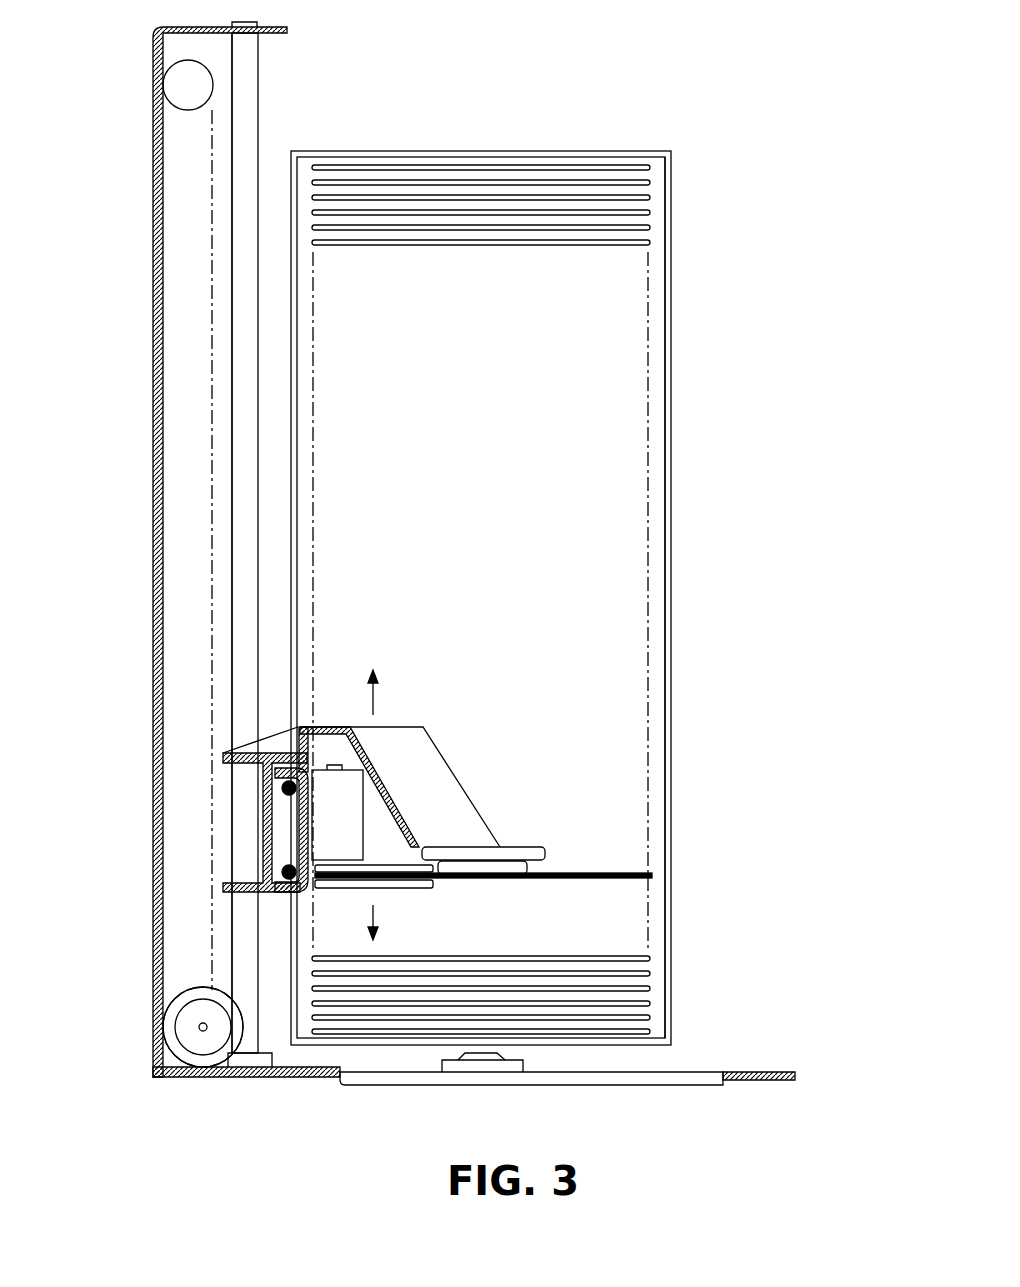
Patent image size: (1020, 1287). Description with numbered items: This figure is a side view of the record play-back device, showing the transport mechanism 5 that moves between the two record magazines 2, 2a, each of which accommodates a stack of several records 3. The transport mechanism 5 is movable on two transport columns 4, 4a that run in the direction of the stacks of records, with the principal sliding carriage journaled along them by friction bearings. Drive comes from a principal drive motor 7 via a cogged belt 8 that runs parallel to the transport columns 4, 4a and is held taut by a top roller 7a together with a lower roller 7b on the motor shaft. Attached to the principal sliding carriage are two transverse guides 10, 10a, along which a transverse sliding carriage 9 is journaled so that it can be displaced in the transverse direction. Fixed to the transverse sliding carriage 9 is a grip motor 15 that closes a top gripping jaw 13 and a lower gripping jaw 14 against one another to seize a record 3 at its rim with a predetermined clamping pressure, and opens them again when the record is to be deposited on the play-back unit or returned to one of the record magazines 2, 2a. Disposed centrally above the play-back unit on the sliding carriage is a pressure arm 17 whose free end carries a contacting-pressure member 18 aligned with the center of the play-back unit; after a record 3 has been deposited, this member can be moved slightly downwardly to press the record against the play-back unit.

The record magazine 2 is at (655, 477).
The record magazine 2a is at (717, 597).
The record 3 is at (583, 882).
The transport column 4 is at (238, 449).
The transport column 4a is at (161, 543).
The transport mechanism 5 is at (232, 892).
The principal drive motor 7 is at (187, 1038).
The top roller 7a is at (167, 70).
The lower pulley 7b is at (173, 987).
The cogged belt 8 is at (212, 287).
The transverse sliding carriage 9 is at (283, 838).
The transverse guide 10 is at (283, 786).
The transverse guide 10a is at (287, 878).
The top gripping jaw 13 is at (432, 850).
The lower gripping jaw 14 is at (415, 897).
The grip motor 15 is at (352, 802).
The pressure arm 17 is at (408, 758).
The contacting-pressure member 18 is at (513, 870).